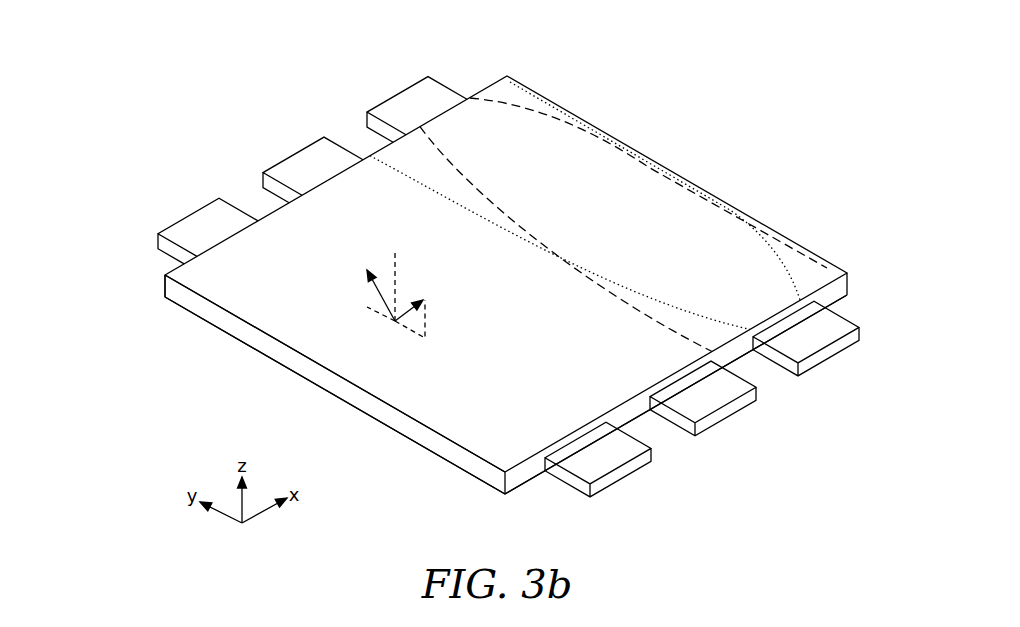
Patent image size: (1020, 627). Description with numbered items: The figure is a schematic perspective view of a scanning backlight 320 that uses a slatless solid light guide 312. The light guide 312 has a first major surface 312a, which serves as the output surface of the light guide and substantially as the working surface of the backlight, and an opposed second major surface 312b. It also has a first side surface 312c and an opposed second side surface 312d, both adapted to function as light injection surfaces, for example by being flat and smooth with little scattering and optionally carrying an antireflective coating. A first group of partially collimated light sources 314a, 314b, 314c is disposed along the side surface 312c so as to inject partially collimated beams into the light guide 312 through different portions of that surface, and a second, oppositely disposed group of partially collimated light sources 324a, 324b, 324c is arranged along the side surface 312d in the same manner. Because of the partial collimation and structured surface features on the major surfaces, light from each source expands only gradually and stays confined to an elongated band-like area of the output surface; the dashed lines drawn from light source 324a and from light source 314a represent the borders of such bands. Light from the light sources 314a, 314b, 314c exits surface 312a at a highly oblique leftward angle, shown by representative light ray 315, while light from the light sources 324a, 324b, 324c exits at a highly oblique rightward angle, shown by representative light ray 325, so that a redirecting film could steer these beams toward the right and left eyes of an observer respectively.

The solid light guide 312 is at (240, 328).
The first major surface 312a is at (420, 397).
The second major surface 312b is at (428, 456).
The first side surface 312c is at (522, 474).
The second side surface 312d is at (110, 260).
The partially collimated light source 314a is at (820, 355).
The partially collimated light source 314b is at (722, 412).
The partially collimated light source 314c is at (615, 473).
The representative light ray 315 is at (380, 290).
The backlight 320 is at (680, 136).
The partially collimated light source 324a is at (393, 93).
The partially collimated light source 324b is at (292, 152).
The partially collimated light source 324c is at (188, 215).
The representative light ray 325 is at (405, 314).